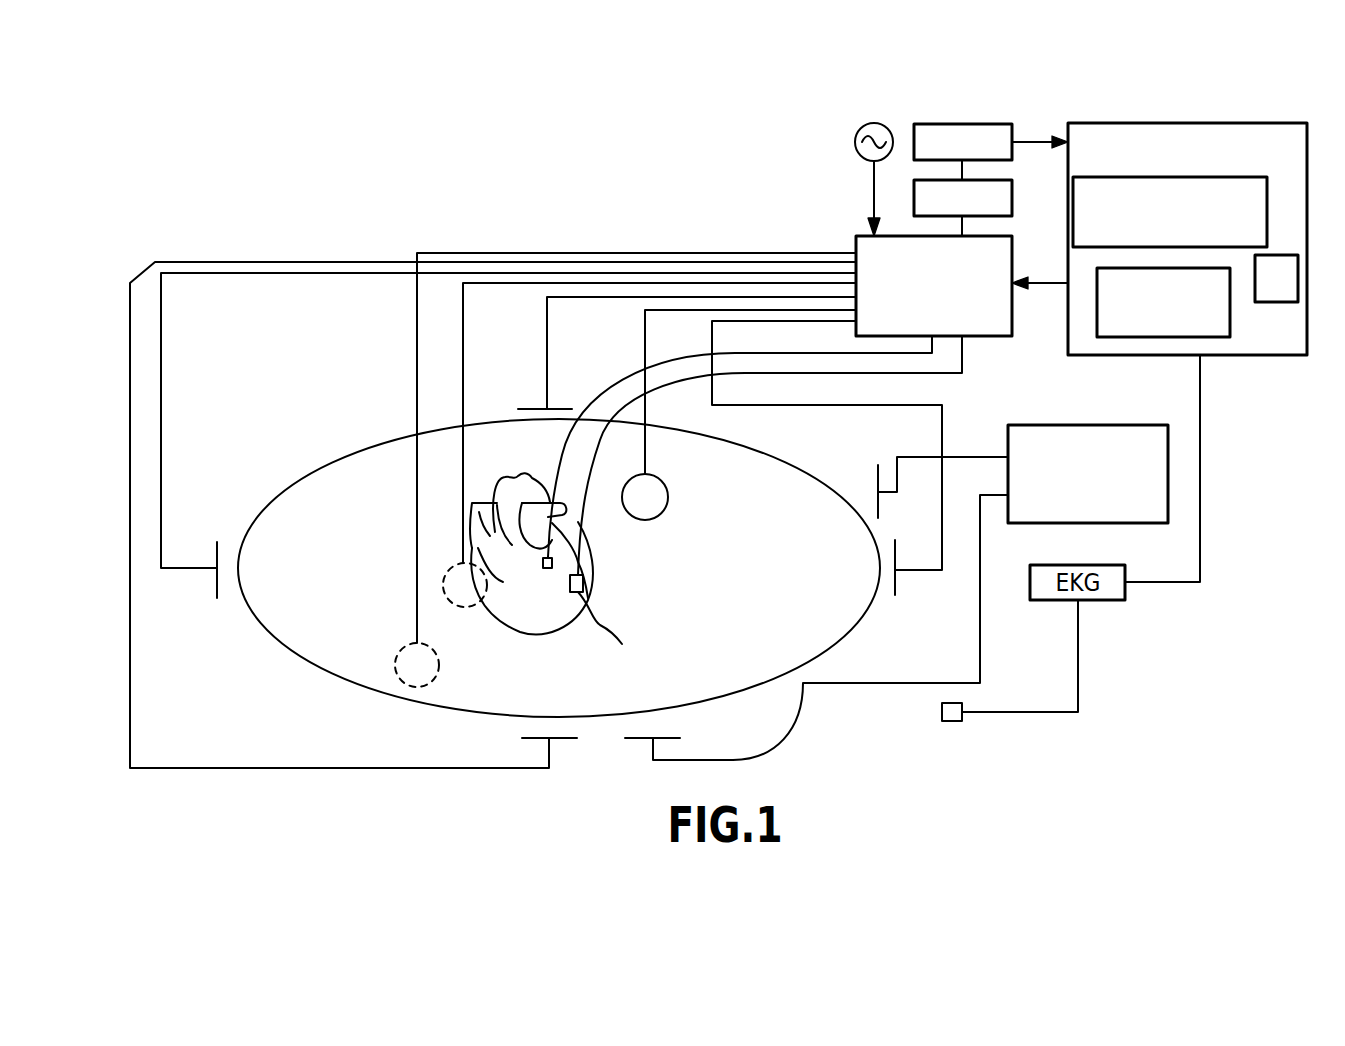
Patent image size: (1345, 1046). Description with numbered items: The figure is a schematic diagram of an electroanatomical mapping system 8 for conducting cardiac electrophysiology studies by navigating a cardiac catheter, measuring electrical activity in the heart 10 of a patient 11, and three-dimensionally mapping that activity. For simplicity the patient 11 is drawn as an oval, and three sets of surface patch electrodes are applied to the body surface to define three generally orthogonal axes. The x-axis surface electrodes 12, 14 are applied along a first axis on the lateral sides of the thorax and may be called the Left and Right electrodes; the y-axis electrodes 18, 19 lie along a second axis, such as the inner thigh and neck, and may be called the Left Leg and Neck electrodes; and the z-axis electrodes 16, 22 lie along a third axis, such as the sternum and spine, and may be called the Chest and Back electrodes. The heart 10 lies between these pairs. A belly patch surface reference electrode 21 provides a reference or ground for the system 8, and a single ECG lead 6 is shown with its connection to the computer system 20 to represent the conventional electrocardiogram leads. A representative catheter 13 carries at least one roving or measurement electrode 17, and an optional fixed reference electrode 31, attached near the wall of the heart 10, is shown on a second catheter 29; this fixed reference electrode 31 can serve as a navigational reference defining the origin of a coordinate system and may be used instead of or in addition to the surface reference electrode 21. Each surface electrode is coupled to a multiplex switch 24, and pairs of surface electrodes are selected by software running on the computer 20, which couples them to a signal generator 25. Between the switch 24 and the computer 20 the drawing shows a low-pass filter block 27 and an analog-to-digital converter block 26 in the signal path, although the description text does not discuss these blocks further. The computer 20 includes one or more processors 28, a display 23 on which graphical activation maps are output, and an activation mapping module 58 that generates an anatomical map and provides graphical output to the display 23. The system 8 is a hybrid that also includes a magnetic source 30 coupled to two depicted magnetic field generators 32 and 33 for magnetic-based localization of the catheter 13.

The ECG lead 6 is at (941, 722).
The electroanatomical mapping system 8 is at (215, 172).
The heart 10 is at (585, 583).
The patient 11 is at (790, 461).
The x-axis surface electrode 12 is at (540, 407).
The catheter 13 is at (962, 358).
The x-axis surface electrode 14 is at (552, 750).
The z-axis surface electrode 16 is at (645, 448).
The catheter electrode 17 is at (607, 631).
The y-axis surface electrode 18 is at (215, 592).
The y-axis surface electrode 19 is at (898, 577).
The computer system 20 is at (1159, 352).
The surface reference electrode 21 is at (416, 580).
The z-axis surface electrode 22 is at (463, 338).
The display 23 is at (1163, 302).
The multiplex switch 24 is at (934, 286).
The signal generator 25 is at (859, 131).
The analog to digital converter 26 is at (980, 124).
The low pass filter 27 is at (1012, 193).
The processor 28 is at (1170, 212).
The second catheter 29 is at (564, 437).
The magnetic source 30 is at (1070, 425).
The fixed reference electrode 31 is at (547, 570).
The magnetic field generator 32 is at (880, 500).
The magnetic field generator 33 is at (665, 762).
The activation mapping module 58 is at (1276, 278).